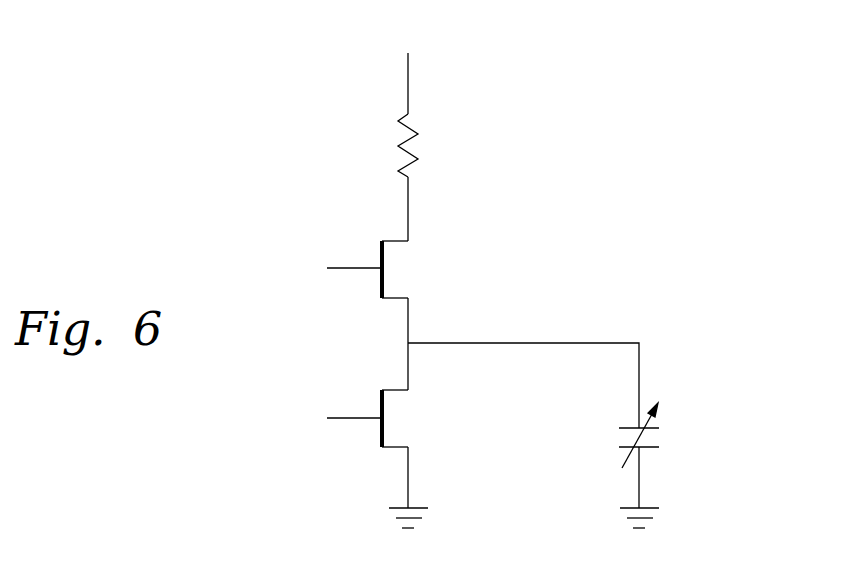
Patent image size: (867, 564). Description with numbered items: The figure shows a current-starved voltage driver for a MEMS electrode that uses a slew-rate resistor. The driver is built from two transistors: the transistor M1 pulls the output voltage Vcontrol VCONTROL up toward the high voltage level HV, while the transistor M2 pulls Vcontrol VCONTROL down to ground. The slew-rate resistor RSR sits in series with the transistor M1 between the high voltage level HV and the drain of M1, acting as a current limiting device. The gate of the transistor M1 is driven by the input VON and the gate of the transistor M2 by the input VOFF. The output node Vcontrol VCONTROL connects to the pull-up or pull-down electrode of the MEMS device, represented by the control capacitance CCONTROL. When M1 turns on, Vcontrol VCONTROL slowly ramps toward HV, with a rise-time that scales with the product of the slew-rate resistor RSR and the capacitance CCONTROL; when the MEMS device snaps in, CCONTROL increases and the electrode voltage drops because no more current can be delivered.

The high voltage level HV is at (408, 65).
The slew-rate resistor RSR is at (436, 177).
The transistor M1 is at (418, 315).
The transistor M2 is at (419, 449).
The on control input VON is at (326, 269).
The off control input VOFF is at (321, 417).
The output control voltage VCONTROL is at (523, 368).
The control capacitance CCONTROL is at (700, 455).